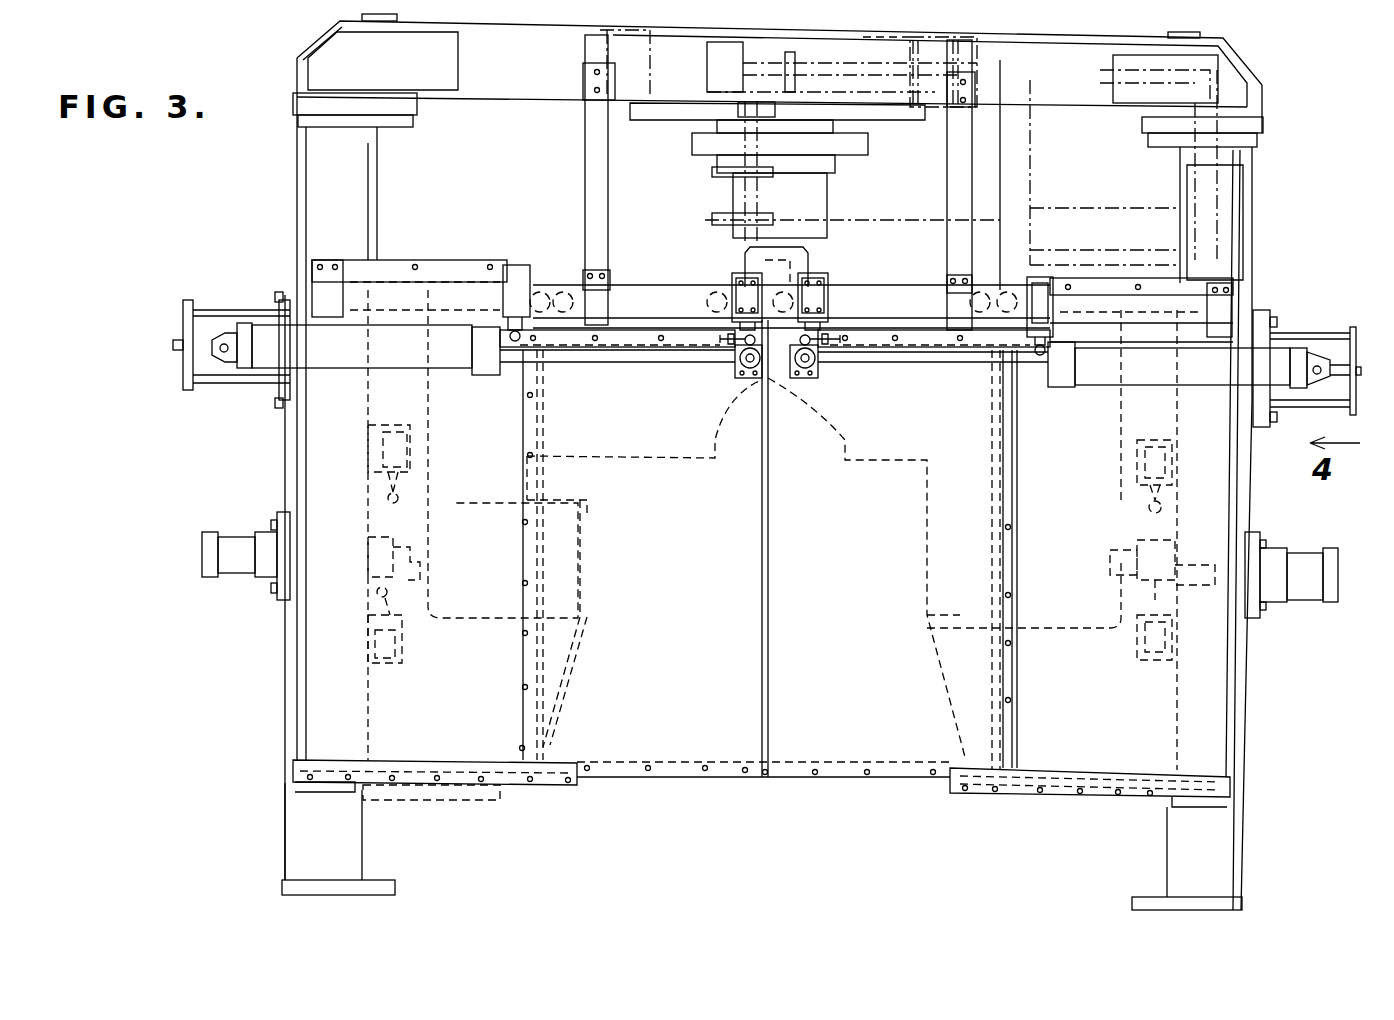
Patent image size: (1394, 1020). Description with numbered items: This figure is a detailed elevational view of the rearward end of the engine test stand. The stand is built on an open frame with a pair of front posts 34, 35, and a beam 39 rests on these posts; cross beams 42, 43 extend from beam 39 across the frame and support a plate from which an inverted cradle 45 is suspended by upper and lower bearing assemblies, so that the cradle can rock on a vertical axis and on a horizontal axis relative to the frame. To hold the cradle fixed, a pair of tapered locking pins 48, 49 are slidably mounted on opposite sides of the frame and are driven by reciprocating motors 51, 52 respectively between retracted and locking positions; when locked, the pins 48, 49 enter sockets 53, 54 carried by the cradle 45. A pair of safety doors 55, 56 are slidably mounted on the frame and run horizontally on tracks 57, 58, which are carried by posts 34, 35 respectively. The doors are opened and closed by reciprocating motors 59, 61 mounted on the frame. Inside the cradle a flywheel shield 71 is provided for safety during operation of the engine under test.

The front post 34 is at (350, 840).
The front post 35 is at (1227, 843).
The beam 39 is at (512, 100).
The cross beam 42 is at (655, 80).
The cross beam 43 is at (985, 62).
The inverted cradle 45 is at (467, 618).
The tapered locking pin 48 is at (403, 533).
The tapered locking pin 49 is at (1135, 560).
The reciprocating motor 51 is at (243, 540).
The reciprocating motor 52 is at (1313, 590).
The socket 53 is at (410, 547).
The socket 54 is at (1120, 590).
The safety door 55 is at (700, 710).
The safety door 56 is at (855, 665).
The track 57 is at (562, 787).
The track 58 is at (987, 793).
The reciprocating motor 59 is at (270, 355).
The reciprocating motor 61 is at (1267, 360).
The flywheel shield 71 is at (575, 650).